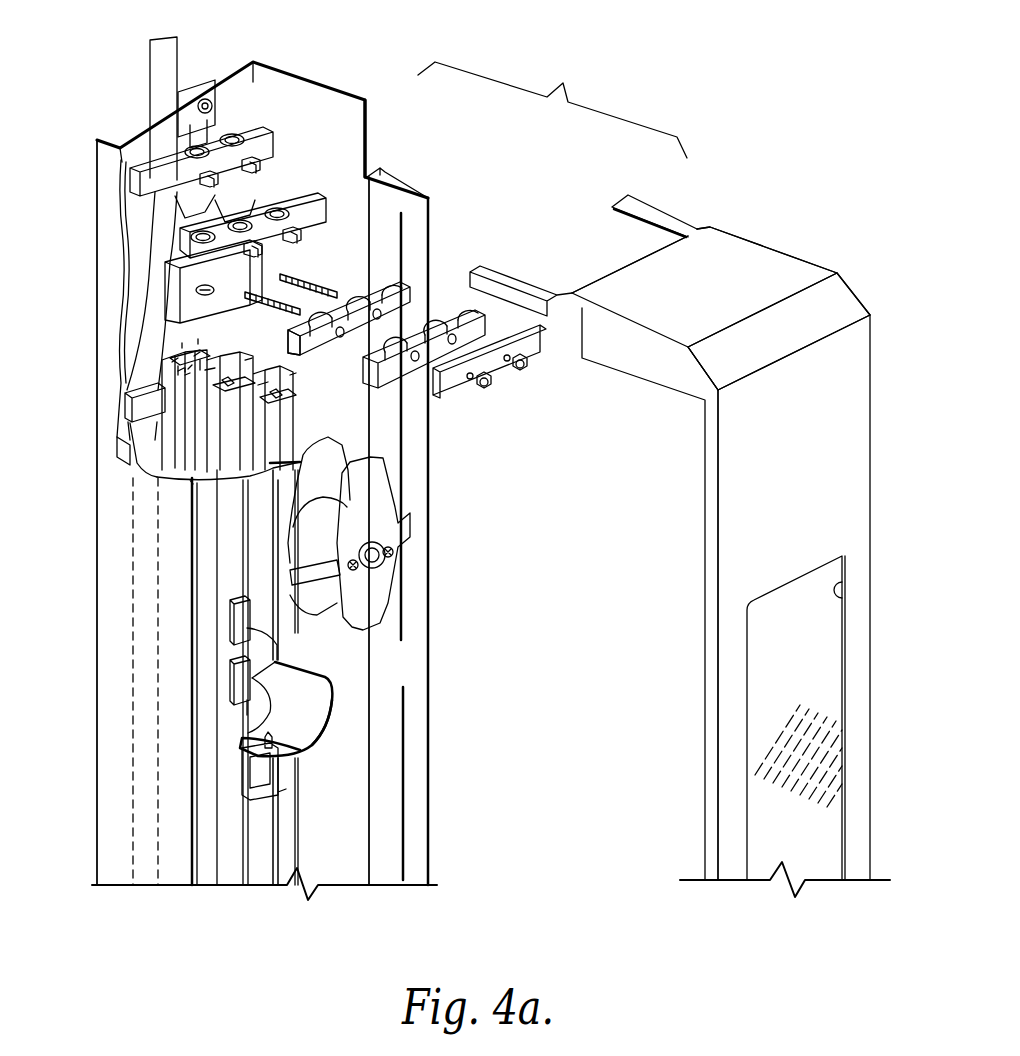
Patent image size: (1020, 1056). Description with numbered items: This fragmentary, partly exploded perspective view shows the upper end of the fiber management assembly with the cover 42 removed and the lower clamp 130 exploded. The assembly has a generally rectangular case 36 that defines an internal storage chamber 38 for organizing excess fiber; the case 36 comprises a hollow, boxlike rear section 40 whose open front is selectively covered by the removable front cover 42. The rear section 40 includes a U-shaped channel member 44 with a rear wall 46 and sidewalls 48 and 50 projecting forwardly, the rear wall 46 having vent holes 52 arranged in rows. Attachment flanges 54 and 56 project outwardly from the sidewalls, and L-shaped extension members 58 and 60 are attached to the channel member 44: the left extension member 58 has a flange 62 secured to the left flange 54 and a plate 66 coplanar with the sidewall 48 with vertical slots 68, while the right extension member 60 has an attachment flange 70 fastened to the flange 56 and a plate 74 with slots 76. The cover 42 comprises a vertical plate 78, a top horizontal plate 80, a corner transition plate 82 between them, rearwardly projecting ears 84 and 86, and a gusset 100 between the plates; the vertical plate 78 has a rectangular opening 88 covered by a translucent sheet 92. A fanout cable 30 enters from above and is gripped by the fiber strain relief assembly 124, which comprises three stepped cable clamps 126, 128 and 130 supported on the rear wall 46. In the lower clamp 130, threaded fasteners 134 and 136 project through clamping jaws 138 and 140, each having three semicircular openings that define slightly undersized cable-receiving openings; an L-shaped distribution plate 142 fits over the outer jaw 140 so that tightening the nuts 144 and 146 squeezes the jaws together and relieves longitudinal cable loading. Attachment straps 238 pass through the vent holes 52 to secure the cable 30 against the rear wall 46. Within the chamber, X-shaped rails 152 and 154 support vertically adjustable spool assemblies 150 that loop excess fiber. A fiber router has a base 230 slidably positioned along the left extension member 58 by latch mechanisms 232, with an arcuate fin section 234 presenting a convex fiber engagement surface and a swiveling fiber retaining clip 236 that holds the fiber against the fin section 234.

The cable 30 is at (163, 42).
The case 36 is at (552, 105).
The storage chamber 38 is at (349, 873).
The rear section 40 is at (305, 80).
The front cover 42 is at (872, 345).
The channel member 44 is at (98, 140).
The rear wall 46 is at (250, 70).
The sidewall 48 is at (118, 882).
The sidewall 50 is at (372, 108).
The vent holes 52 is at (118, 450).
The attachment flange 54 is at (192, 885).
The attachment flange 56 is at (384, 170).
The left extension member 58 is at (226, 885).
The right extension member 60 is at (432, 857).
The flange 62 is at (203, 580).
The plate 66 is at (268, 885).
The slots 68 is at (193, 800).
The attachment flange 70 is at (400, 176).
The plate 74 is at (420, 659).
The slots 76 is at (405, 730).
The vertical plate 78 is at (718, 585).
The top horizontal plate 80 is at (757, 245).
The corner transition plate 82 is at (840, 283).
The ear 84 is at (508, 270).
The ear 86 is at (680, 212).
The rectangular opening 88 is at (840, 595).
The translucent sheet 92 is at (765, 740).
The gusset 100 is at (680, 378).
The fiber strain relief assembly 124 is at (201, 78).
The cable clamp 126 is at (250, 130).
The cable clamp 128 is at (297, 192).
The lower clamp 130 is at (413, 290).
The threaded fastener 134 is at (292, 305).
The threaded fastener 136 is at (323, 297).
The clamping jaw 138 is at (333, 343).
The clamping jaw 140 is at (488, 316).
The distribution plate 142 is at (447, 393).
The nut 144 is at (487, 392).
The nut 146 is at (525, 370).
The spool assembly 150 is at (383, 575).
The rail 152 is at (187, 356).
The rail 154 is at (290, 408).
The base 230 is at (262, 650).
The latch mechanisms 232 is at (235, 690).
The fin section 234 is at (335, 730).
The fiber retaining clip 236 is at (290, 784).
The attachment strap 238 is at (125, 402).